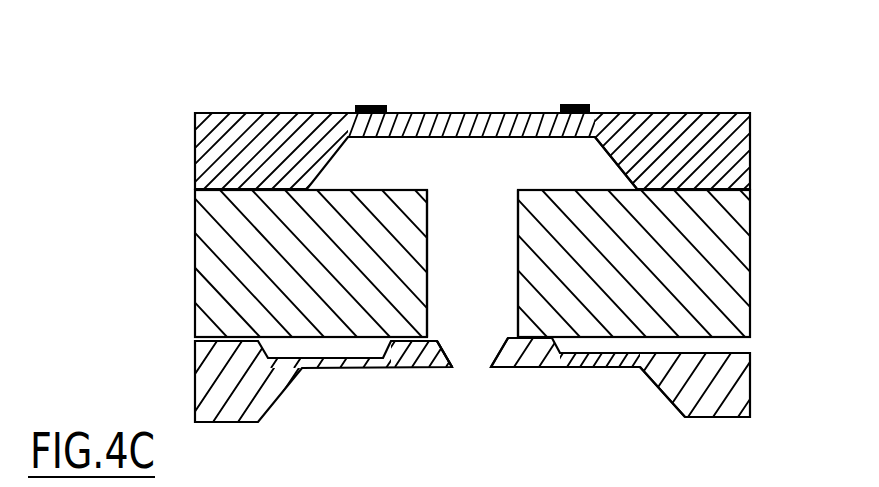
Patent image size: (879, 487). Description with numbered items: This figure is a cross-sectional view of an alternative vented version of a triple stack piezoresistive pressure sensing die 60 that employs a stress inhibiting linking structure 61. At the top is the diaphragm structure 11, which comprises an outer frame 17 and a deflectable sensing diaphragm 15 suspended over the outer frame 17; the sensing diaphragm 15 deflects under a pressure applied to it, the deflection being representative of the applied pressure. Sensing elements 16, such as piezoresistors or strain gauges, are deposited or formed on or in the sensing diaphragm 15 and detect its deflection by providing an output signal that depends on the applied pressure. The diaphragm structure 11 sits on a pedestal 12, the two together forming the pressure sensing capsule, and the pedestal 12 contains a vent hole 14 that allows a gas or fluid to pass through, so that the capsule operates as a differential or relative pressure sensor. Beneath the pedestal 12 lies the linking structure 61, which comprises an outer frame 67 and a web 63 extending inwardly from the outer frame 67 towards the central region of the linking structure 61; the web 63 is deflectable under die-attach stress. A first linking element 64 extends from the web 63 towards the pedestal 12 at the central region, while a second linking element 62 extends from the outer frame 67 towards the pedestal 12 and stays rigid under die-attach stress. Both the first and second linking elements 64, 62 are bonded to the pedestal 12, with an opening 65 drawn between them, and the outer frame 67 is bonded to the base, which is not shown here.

The sensing die 60 is at (218, 111).
The diaphragm structure 11 is at (731, 111).
The sensing diaphragm 15 is at (515, 138).
The outer frame 17 is at (598, 153).
The sensing elements 16 is at (567, 103).
The pedestal 12 is at (733, 264).
The vent hole 14 is at (468, 215).
The second linking element 62 is at (192, 348).
The first linking element 64 is at (461, 363).
The gap / opening 65 is at (475, 363).
The linking structure 61 is at (723, 387).
The web 63 is at (593, 362).
The outer frame 67 is at (678, 393).